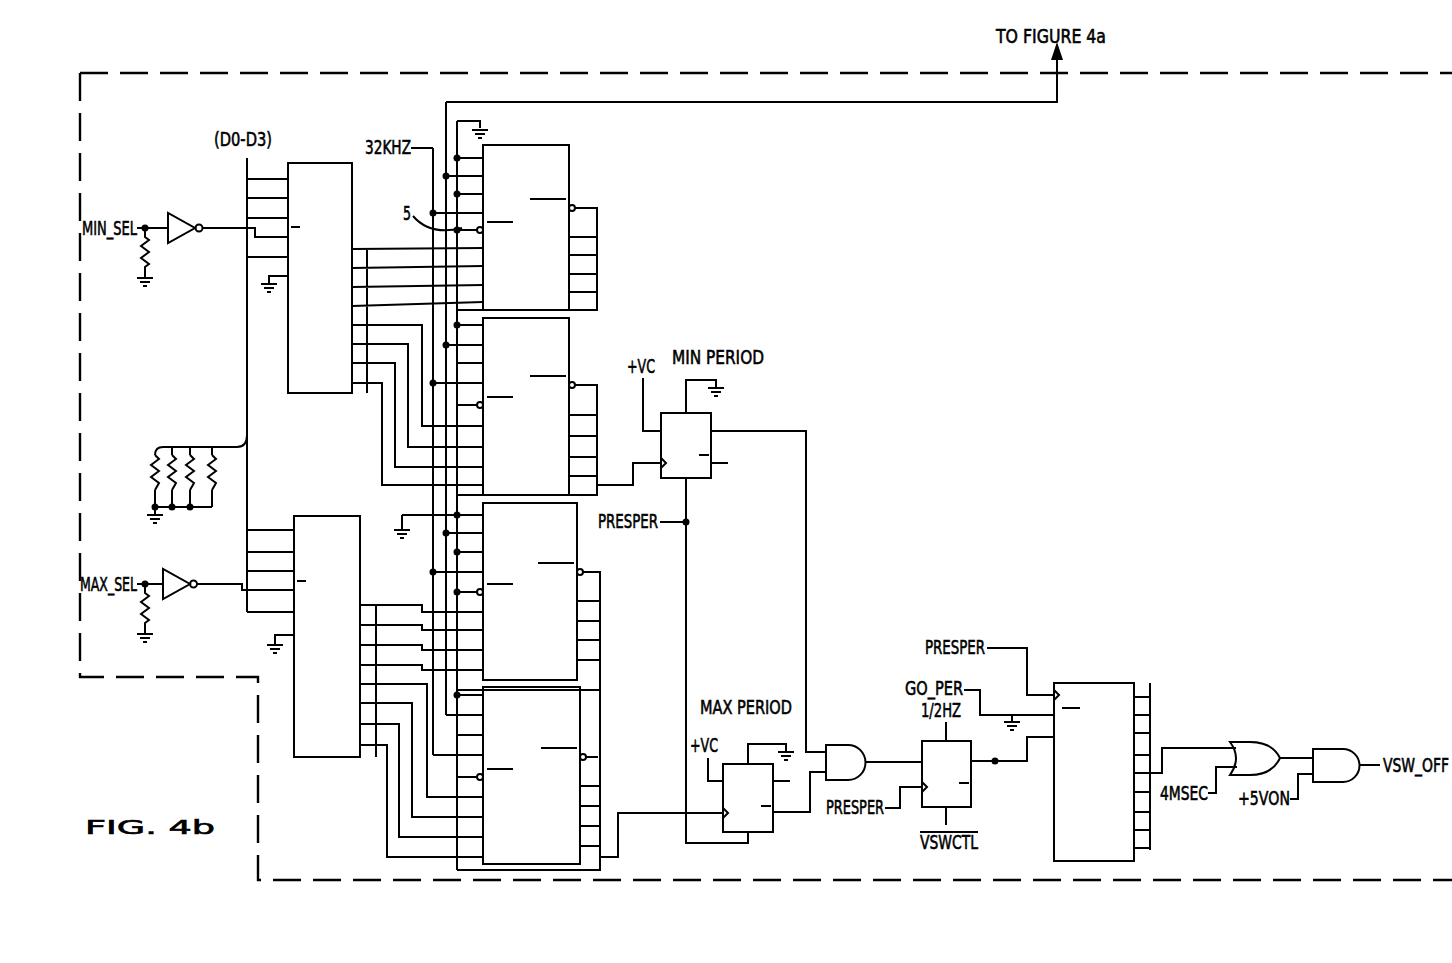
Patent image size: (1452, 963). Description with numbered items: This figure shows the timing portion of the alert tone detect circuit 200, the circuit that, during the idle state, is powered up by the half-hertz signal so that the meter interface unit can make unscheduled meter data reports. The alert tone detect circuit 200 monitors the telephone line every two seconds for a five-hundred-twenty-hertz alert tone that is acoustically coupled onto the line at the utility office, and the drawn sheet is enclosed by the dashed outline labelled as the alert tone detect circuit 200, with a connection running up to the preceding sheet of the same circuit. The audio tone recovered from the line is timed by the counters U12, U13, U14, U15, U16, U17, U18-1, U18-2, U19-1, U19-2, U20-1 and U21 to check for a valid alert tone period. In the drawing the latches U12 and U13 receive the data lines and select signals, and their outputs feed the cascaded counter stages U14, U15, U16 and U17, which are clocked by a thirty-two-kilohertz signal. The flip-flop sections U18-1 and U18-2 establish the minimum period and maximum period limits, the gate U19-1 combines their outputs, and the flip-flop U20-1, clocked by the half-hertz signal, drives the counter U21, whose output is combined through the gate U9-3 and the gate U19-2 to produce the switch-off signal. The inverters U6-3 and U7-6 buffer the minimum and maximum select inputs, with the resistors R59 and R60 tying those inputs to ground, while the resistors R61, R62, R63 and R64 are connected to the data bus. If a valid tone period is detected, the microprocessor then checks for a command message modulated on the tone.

The alert tone detect circuit 200 is at (1280, 73).
The counter U12 is at (366, 312).
The counter U13 is at (365, 674).
The counter U14 is at (571, 168).
The counter U15 is at (571, 332).
The counter U16 is at (579, 545).
The counter U17 is at (582, 708).
The counter U18-1 is at (713, 424).
The counter U18-2 is at (757, 838).
The counter U19-1 is at (874, 751).
The counter U19-2 is at (1346, 752).
The counter U20-1 is at (973, 818).
The counter U21 is at (1138, 760).
The OR gate U9-3 is at (1271, 745).
The inverter U6-3 is at (171, 217).
The inverter U7-6 is at (215, 573).
The resistor R59 is at (130, 257).
The resistor R60 is at (162, 613).
The resistor R61 is at (133, 477).
The resistor R62 is at (172, 495).
The resistor R63 is at (190, 490).
The resistor R64 is at (228, 476).